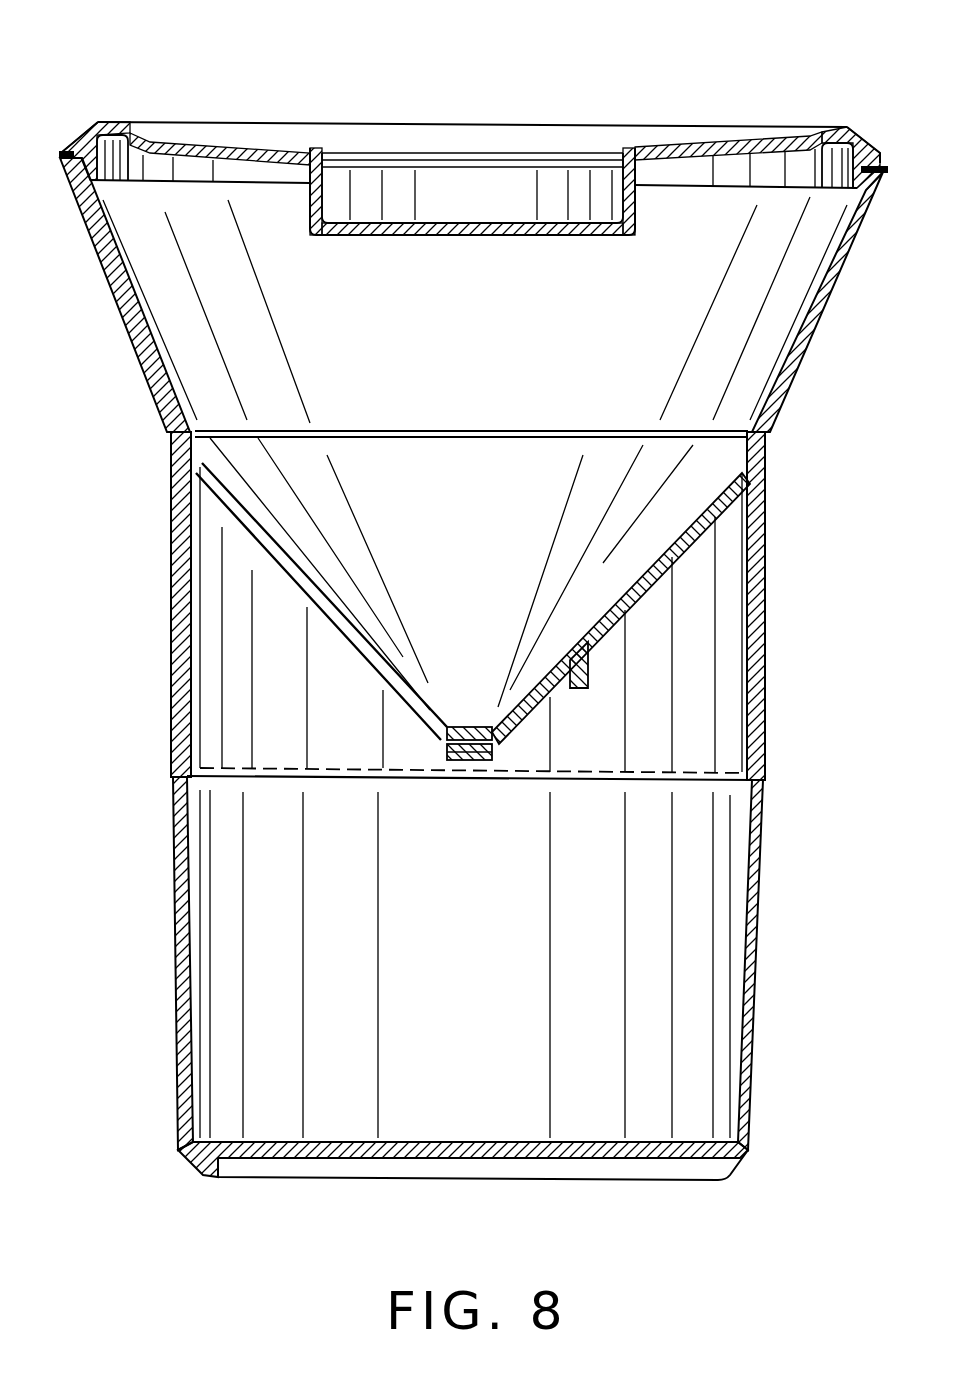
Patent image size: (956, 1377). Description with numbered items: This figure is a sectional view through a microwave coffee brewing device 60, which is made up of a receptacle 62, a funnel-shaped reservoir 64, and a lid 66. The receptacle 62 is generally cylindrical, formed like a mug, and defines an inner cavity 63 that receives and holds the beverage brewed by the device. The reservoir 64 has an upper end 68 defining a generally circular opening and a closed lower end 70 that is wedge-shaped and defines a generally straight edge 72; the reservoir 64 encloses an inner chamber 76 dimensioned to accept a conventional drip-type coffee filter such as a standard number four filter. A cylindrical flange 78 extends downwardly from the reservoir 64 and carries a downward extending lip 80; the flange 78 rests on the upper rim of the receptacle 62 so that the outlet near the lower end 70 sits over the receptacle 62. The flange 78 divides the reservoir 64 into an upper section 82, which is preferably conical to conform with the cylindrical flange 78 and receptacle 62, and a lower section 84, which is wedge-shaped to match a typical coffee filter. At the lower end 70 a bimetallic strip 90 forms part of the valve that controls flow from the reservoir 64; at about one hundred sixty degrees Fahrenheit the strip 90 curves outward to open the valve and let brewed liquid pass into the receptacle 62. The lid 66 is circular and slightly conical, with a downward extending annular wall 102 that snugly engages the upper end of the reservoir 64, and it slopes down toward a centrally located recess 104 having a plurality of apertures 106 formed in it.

The microwave coffee brewing device 60 is at (176, 60).
The receptacle 62 is at (178, 950).
The inner cavity 63 is at (480, 941).
The reservoir 64 is at (171, 648).
The lid 66 is at (112, 124).
The upper end 68 is at (157, 210).
The lower end 70 is at (424, 742).
The straight edge 72 is at (470, 727).
The inner chamber 76 is at (462, 380).
The cylindrical flange 78 is at (767, 563).
The lip 80 is at (713, 773).
The upper section 82 is at (802, 392).
The lower section 84 is at (637, 577).
The bimetallic strip 90 is at (468, 760).
The annular wall 102 is at (828, 165).
The recess 104 is at (368, 185).
The apertures 106 is at (473, 222).